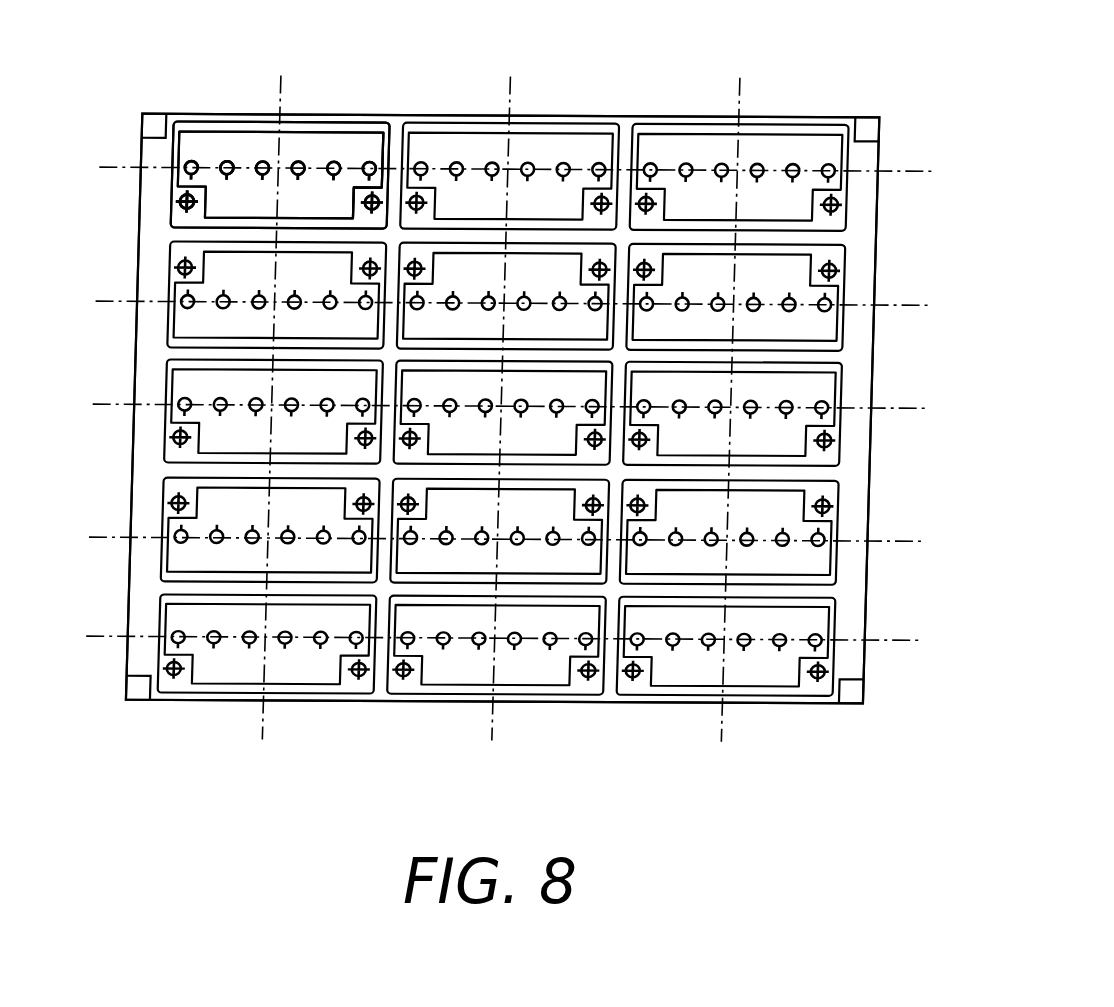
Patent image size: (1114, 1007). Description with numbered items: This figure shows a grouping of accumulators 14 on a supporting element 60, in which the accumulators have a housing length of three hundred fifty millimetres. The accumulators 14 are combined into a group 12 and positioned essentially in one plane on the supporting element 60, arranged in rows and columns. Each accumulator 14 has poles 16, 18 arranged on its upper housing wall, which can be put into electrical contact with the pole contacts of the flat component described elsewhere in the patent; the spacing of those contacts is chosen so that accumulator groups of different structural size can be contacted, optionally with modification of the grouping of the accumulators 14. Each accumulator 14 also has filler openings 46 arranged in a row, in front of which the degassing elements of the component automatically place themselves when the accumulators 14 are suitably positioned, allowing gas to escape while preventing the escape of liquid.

The group 12 is at (954, 237).
The accumulator 14 is at (317, 145).
The pole 16 is at (185, 202).
The pole 18 is at (379, 198).
The filler opening 46 is at (234, 161).
The supporting element 60 is at (874, 154).